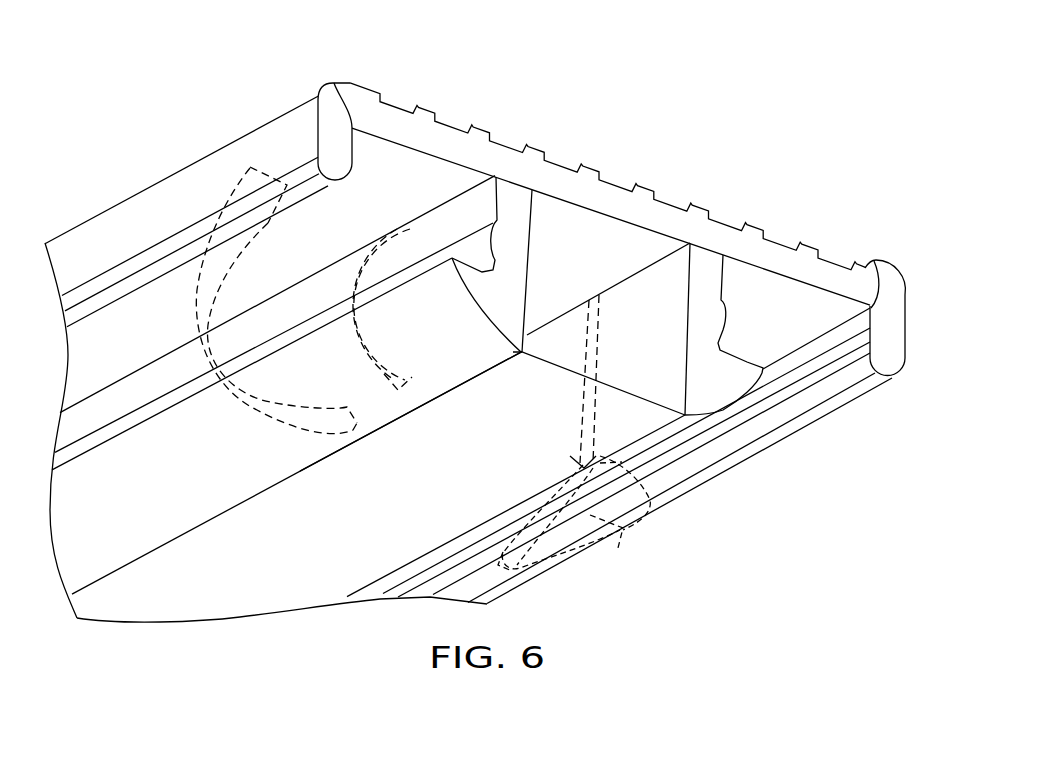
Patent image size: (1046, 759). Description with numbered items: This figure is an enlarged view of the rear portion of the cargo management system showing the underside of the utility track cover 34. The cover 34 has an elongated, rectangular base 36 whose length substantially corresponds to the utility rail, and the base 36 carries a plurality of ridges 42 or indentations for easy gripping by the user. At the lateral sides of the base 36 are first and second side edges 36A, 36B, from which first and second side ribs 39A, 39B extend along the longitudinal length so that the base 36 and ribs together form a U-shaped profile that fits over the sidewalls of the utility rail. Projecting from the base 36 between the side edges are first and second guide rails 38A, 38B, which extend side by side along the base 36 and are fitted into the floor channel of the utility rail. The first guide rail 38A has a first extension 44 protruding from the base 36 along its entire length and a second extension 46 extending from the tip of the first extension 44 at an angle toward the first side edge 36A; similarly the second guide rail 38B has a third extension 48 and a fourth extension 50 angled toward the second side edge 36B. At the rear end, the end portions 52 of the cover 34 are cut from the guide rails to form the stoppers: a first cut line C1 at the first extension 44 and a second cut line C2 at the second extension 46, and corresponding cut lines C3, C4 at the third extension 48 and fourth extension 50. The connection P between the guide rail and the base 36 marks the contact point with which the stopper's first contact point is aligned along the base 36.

The utility track cover 34 is at (630, 249).
The base 36 is at (630, 209).
The first side edge 36A is at (334, 83).
The second side edge 36B is at (896, 295).
The first guide rail 38A is at (215, 496).
The second guide rail 38B is at (317, 552).
The first side rib 39A is at (114, 236).
The second side rib 39B is at (905, 343).
The ridges 42 is at (609, 185).
The first extension 44 is at (531, 238).
The second extension 46 is at (477, 311).
The third extension 48 is at (689, 328).
The fourth extension 50 is at (743, 397).
The end portions 52 is at (464, 387).
The contact point P is at (638, 302).
The first cut line C1 is at (397, 250).
The second cut line C2 is at (383, 430).
The third direction C3 is at (597, 415).
The fourth cut line C4 is at (652, 510).